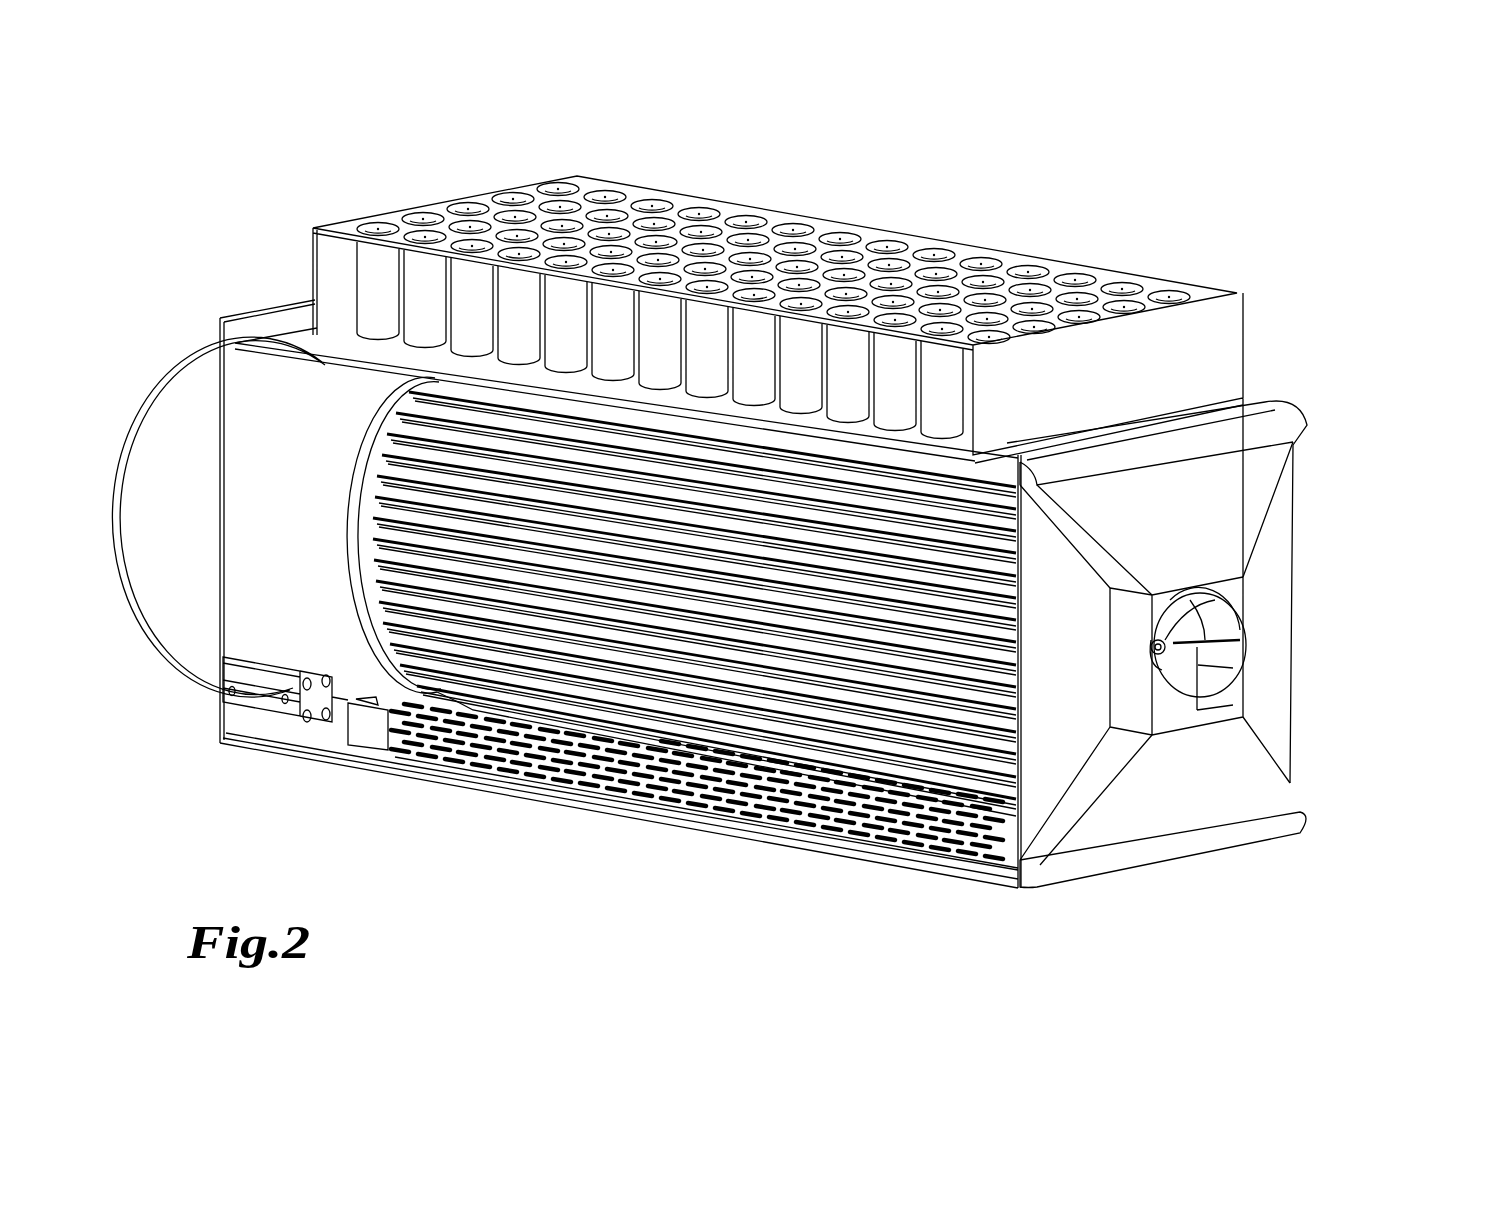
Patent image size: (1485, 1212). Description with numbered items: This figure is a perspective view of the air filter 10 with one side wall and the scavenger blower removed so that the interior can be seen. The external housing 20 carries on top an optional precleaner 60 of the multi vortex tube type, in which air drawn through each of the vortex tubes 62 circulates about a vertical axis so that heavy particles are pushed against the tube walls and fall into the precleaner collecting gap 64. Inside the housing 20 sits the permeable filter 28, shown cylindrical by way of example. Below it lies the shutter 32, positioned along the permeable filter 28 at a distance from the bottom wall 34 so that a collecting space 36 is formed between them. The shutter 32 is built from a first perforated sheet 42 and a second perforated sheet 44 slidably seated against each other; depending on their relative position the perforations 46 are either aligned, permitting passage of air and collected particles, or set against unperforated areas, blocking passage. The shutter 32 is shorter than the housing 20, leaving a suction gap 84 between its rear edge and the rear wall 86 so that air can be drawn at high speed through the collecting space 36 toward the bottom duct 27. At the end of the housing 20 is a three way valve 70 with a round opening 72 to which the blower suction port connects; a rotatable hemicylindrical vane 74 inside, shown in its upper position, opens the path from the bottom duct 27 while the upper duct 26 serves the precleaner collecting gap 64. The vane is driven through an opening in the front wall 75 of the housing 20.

The air filter 10 is at (1362, 200).
The external housing 20 is at (222, 605).
The upper duct 26 is at (1290, 437).
The bottom duct 27 is at (1070, 855).
The permeable filter 28 is at (412, 580).
The shutter 32 is at (660, 795).
The bottom wall 34 is at (490, 787).
The collecting space 36 is at (570, 792).
The first perforated sheet 42 is at (325, 725).
The second perforated sheet 44 is at (375, 745).
The perforations 46 is at (875, 845).
The precleaner 60 is at (487, 200).
The vortex tubes 62 is at (377, 277).
The precleaner collecting gap 64 is at (305, 345).
The three way valve 70 is at (1255, 645).
The round opening 72 is at (1232, 690).
The hemicylindrical vane 74 is at (1238, 635).
The front wall 75 is at (1278, 550).
The suction gap 84 is at (222, 740).
The rear wall 86 is at (228, 401).